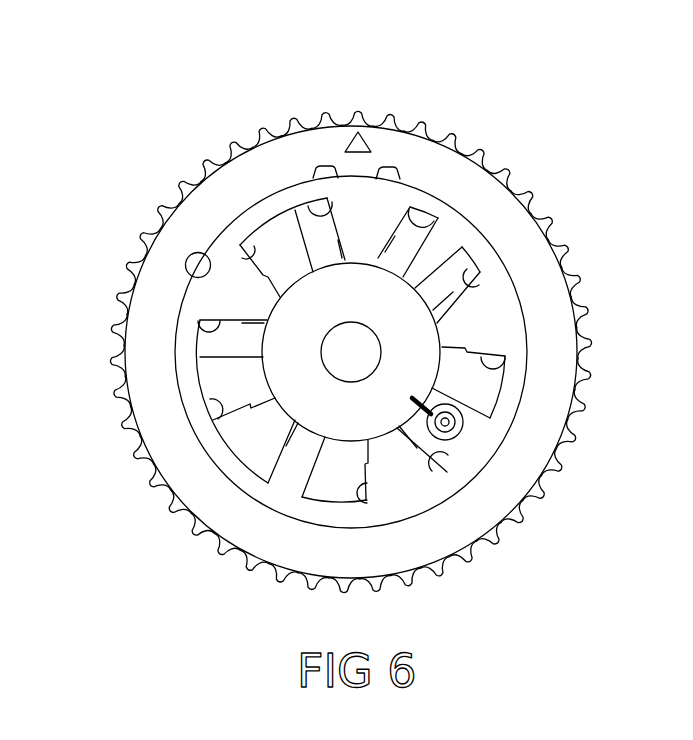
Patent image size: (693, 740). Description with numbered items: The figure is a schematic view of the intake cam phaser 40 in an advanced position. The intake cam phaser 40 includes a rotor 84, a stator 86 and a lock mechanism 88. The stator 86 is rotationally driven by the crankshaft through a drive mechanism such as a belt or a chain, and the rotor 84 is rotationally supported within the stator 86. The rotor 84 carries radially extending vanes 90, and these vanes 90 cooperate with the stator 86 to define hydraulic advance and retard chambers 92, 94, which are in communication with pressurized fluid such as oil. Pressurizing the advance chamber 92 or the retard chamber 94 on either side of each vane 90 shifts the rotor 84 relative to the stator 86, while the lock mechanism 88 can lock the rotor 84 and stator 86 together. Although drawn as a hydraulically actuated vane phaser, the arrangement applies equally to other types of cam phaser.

The intake cam phaser 40 is at (150, 114).
The rotor 84 is at (440, 228).
The stator 86 is at (378, 122).
The lock mechanism 88 is at (483, 443).
The vanes 90 is at (307, 220).
The advance chamber 92 is at (447, 200).
The retard chamber 94 is at (312, 200).